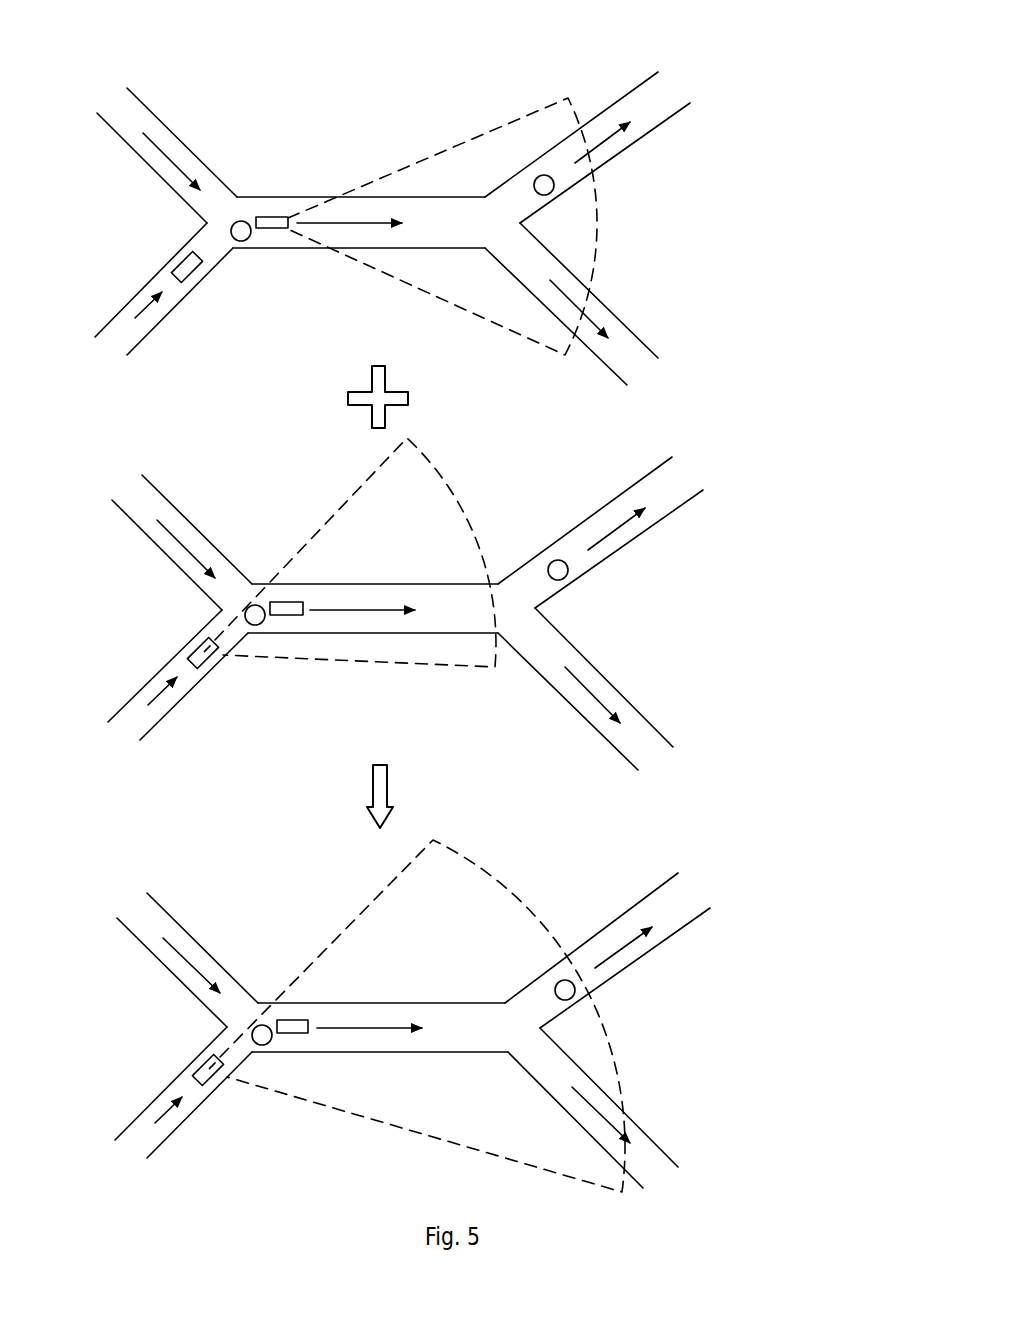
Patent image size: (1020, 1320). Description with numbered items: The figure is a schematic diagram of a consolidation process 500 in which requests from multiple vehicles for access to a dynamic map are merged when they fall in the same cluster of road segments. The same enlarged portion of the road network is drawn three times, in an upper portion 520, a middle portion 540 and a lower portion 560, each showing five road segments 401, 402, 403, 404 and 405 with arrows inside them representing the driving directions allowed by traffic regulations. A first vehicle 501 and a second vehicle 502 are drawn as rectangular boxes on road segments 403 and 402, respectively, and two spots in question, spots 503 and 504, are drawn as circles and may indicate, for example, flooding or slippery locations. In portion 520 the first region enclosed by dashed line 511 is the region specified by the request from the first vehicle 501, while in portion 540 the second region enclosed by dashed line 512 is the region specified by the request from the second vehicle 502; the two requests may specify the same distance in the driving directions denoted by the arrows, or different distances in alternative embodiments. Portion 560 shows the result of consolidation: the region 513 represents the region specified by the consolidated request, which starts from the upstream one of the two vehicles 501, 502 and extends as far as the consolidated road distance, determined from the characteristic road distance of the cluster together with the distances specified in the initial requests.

The consolidation process 500 is at (128, 31).
The first state of microfluidic junction 520 is at (757, 38).
The second state of microfluidic junction 540 is at (775, 461).
The portion 560 is at (766, 855).
The road segment 401 is at (180, 137).
The road segment 402 is at (192, 285).
The road segment 403 is at (355, 195).
The road segment 404 is at (670, 120).
The road segment 405 is at (620, 322).
The first vehicle 501 is at (272, 217).
The second vehicle 502 is at (183, 258).
The spot 503 is at (240, 221).
The spot 504 is at (552, 192).
The first region 511 is at (470, 138).
The second region 512 is at (465, 517).
The region 513 is at (497, 885).